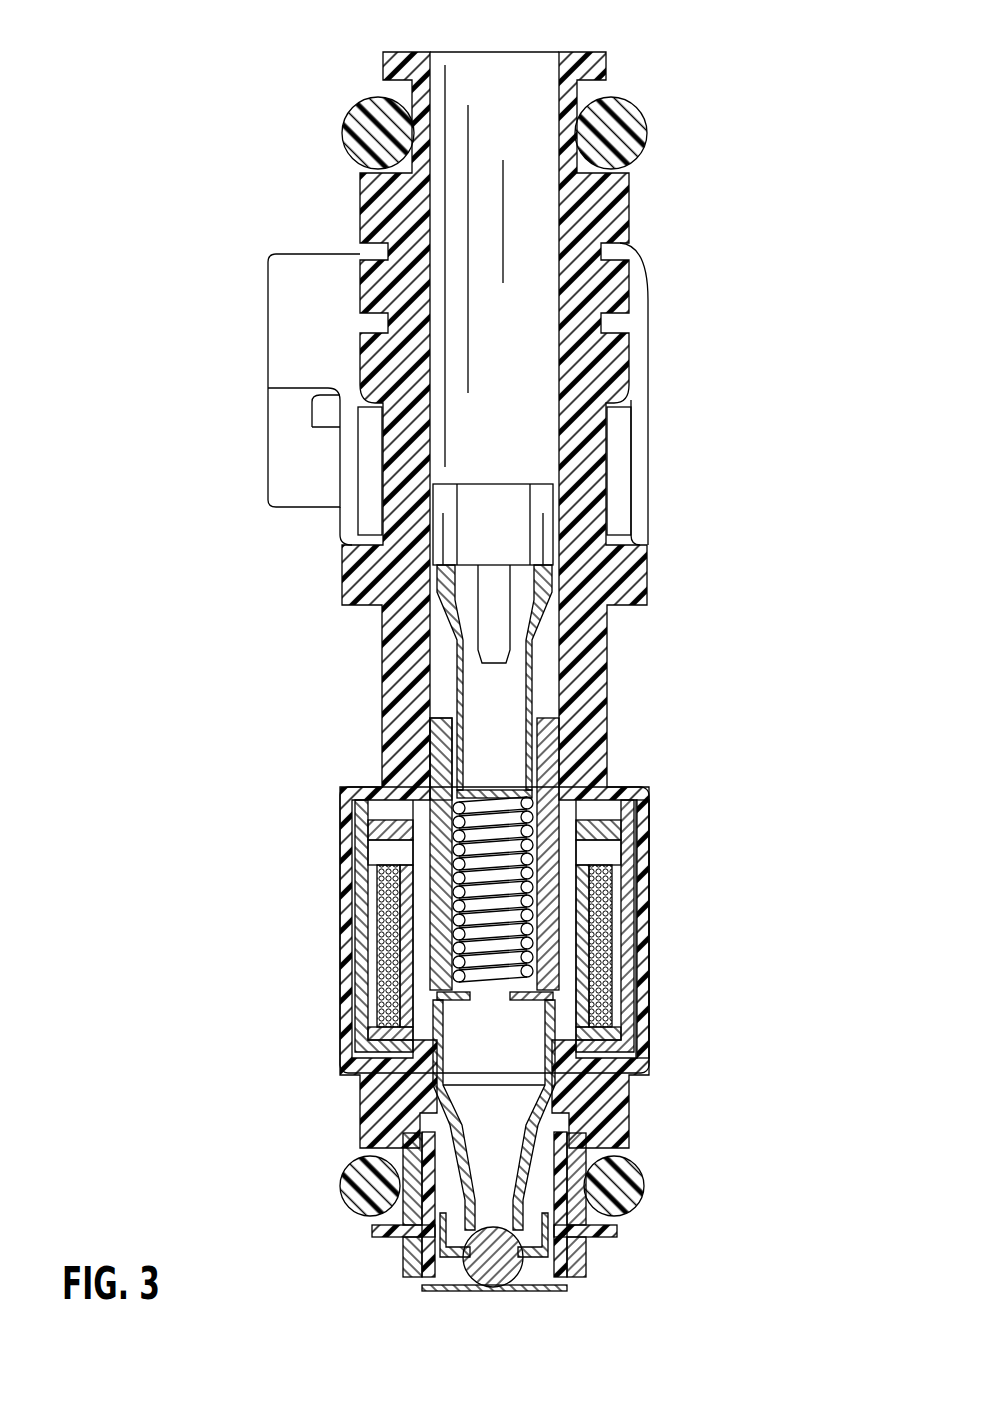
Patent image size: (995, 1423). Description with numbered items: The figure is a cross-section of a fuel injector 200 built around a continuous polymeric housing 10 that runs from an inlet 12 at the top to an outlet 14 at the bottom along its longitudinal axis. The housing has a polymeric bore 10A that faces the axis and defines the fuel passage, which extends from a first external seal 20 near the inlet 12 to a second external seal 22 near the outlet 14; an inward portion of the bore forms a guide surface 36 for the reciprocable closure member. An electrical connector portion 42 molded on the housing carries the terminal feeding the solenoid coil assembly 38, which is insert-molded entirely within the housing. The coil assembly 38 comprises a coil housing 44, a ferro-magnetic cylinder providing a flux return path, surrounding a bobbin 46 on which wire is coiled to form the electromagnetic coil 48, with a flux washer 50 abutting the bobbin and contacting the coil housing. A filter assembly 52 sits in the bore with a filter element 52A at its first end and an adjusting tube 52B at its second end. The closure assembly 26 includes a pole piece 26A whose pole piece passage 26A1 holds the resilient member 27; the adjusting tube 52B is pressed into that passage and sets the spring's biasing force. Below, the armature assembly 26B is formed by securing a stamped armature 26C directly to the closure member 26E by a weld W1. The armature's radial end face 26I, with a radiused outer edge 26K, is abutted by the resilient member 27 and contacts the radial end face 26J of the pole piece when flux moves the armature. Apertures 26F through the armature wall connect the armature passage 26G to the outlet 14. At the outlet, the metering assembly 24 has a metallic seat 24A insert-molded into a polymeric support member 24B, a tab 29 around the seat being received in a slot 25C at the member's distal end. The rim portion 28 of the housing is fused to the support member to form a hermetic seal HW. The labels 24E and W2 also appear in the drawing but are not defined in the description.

The fuel injector 200 is at (842, 158).
The polymeric housing 10 is at (630, 227).
The polymeric bore 10A is at (558, 357).
The inlet 12 is at (512, 40).
The first external seal 20 is at (625, 118).
The electrical connector portion 42 is at (290, 343).
The filter assembly 52 is at (540, 665).
The filter element 52A is at (520, 585).
The adjusting tube 52B is at (480, 800).
The bobbin 46 is at (373, 842).
The pole piece passage 26A1 is at (462, 770).
The flux washer 50 is at (648, 800).
The coil housing 44 is at (628, 848).
The closure assembly 26 is at (596, 930).
The pole piece 26A is at (606, 876).
The armature assembly 26B is at (606, 972).
The resilient member 27 is at (458, 868).
The radial end face of pole piece 26J is at (387, 920).
The electromagnetic coil 48 is at (385, 948).
The outer edge 26K is at (423, 984).
The radial end face of armature 26I is at (418, 1022).
The solenoid coil assembly 38 is at (624, 993).
The armature 26C is at (620, 1043).
The armature passage 26G is at (427, 1057).
The guide surface 36 is at (440, 1008).
The second external seal 22 is at (362, 1165).
The metering assembly 24 is at (413, 1284).
The seat 24A is at (510, 1292).
The tab 29 is at (420, 1237).
The rim portion 28 is at (470, 1250).
The polymeric support member 24B is at (407, 1253).
The valve body sleeve 24E is at (430, 1215).
The closure member 26E is at (415, 1203).
The aperture 26F is at (553, 1160).
The weld W1 is at (573, 1222).
The slot 25C is at (520, 1233).
The hermetic seal HW is at (565, 1255).
The second width W2 is at (557, 1290).
The outlet 14 is at (465, 1297).